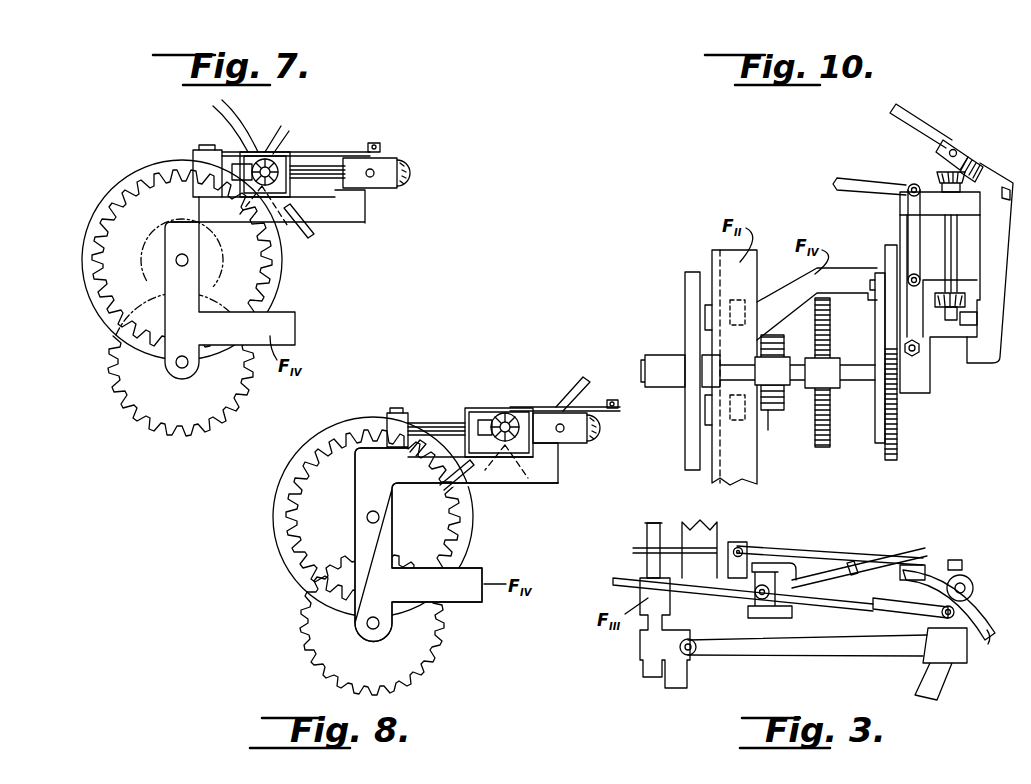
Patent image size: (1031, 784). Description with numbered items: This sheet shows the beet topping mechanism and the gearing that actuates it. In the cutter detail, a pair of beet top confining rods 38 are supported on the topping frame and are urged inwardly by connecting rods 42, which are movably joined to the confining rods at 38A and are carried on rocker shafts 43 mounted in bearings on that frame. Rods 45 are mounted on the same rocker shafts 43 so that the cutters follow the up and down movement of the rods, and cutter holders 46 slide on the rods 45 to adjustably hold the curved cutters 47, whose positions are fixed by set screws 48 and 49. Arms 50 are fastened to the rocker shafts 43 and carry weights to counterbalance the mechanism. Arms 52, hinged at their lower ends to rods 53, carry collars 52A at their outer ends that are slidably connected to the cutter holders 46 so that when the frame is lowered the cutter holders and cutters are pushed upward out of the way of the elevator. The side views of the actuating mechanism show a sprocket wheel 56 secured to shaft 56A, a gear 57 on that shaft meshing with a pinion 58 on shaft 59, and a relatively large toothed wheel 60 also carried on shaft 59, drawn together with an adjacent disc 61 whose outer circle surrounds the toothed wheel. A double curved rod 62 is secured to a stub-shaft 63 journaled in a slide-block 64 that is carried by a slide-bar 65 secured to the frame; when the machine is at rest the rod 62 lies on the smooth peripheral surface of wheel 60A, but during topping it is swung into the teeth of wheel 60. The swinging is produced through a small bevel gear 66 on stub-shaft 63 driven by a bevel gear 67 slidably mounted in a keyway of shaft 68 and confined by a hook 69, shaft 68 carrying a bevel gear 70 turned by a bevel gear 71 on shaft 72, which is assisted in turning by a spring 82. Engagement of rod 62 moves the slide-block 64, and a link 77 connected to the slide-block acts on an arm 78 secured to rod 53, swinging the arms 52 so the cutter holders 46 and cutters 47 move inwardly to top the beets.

In FIG. 3, the beet top confining rods 38 is at (822, 553).
In FIG. 3, the movable connection 38A is at (972, 548).
In FIG. 3, the connecting rods 42 is at (852, 574).
In FIG. 3, the rocker shafts 43 is at (753, 600).
In FIG. 3, the rods 45 is at (818, 601).
In FIG. 3, the cutter holders 46 is at (989, 640).
In FIG. 3, the cutters 47 is at (992, 624).
In FIG. 3, the set screw 48 is at (971, 584).
In FIG. 3, the set screw 49 is at (925, 564).
In FIG. 3, the arms 50 is at (621, 578).
In FIG. 3, the arms 52 is at (860, 658).
In FIG. 3, the collars 52A is at (941, 664).
In FIG. 3, the rods 53 is at (647, 533).
In FIG. 10, the sprocket wheel 56 is at (772, 428).
In FIG. 7, the shaft 56A is at (181, 369).
In FIG. 8, the shaft 56A is at (374, 616).
In FIG. 7, the gear 57 is at (113, 361).
In FIG. 8, the gear 57 is at (302, 606).
In FIG. 10, the gear 57 is at (830, 440).
In FIG. 7, the pinion 58 is at (152, 262).
In FIG. 10, the pinion 58 is at (815, 398).
In FIG. 7, the shaft 59 is at (176, 262).
In FIG. 8, the shaft 59 is at (367, 517).
In FIG. 7, the toothed wheel 60 is at (108, 222).
In FIG. 8, the toothed wheel 60 is at (312, 468).
In FIG. 10, the toothed wheel 60 is at (898, 419).
In FIG. 10, the wheel 60A is at (880, 446).
In FIG. 7, the disc 61 is at (100, 205).
In FIG. 8, the disc 61 is at (278, 492).
In FIG. 10, the disc 61 is at (690, 432).
In FIG. 7, the double curved rod 62 is at (229, 112).
In FIG. 8, the double curved rod 62 is at (579, 376).
In FIG. 10, the double curved rod 62 is at (878, 330).
In FIG. 8, the stub-shaft 63 is at (484, 420).
In FIG. 7, the slide-block 64 is at (284, 192).
In FIG. 8, the slide-block 64 is at (470, 458).
In FIG. 10, the slide-block 64 is at (990, 364).
In FIG. 7, the slide-bar 65 is at (347, 186).
In FIG. 8, the slide-bar 65 is at (408, 418).
In FIG. 7, the small bevel gear 66 is at (280, 150).
In FIG. 8, the small bevel gear 66 is at (500, 446).
In FIG. 10, the small bevel gear 66 is at (934, 299).
In FIG. 7, the bevel gear 67 is at (255, 165).
In FIG. 8, the bevel gear 67 is at (490, 418).
In FIG. 10, the bevel gear 67 is at (968, 330).
In FIG. 7, the shaft 68 is at (300, 195).
In FIG. 8, the shaft 68 is at (446, 440).
In FIG. 10, the shaft 68 is at (957, 242).
In FIG. 7, the hook 69 is at (240, 168).
In FIG. 10, the hook 69 is at (960, 300).
In FIG. 10, the bevel gear 70 is at (944, 153).
In FIG. 10, the bevel gear 71 is at (972, 156).
In FIG. 10, the shaft 72 is at (1003, 204).
In FIG. 7, the link 77 is at (294, 153).
In FIG. 8, the link 77 is at (520, 407).
In FIG. 10, the link 77 is at (907, 232).
In FIG. 7, the arm 78 is at (378, 143).
In FIG. 8, the arm 78 is at (612, 399).
In FIG. 10, the arm 78 is at (862, 183).
In FIG. 10, the spring 82 is at (923, 133).